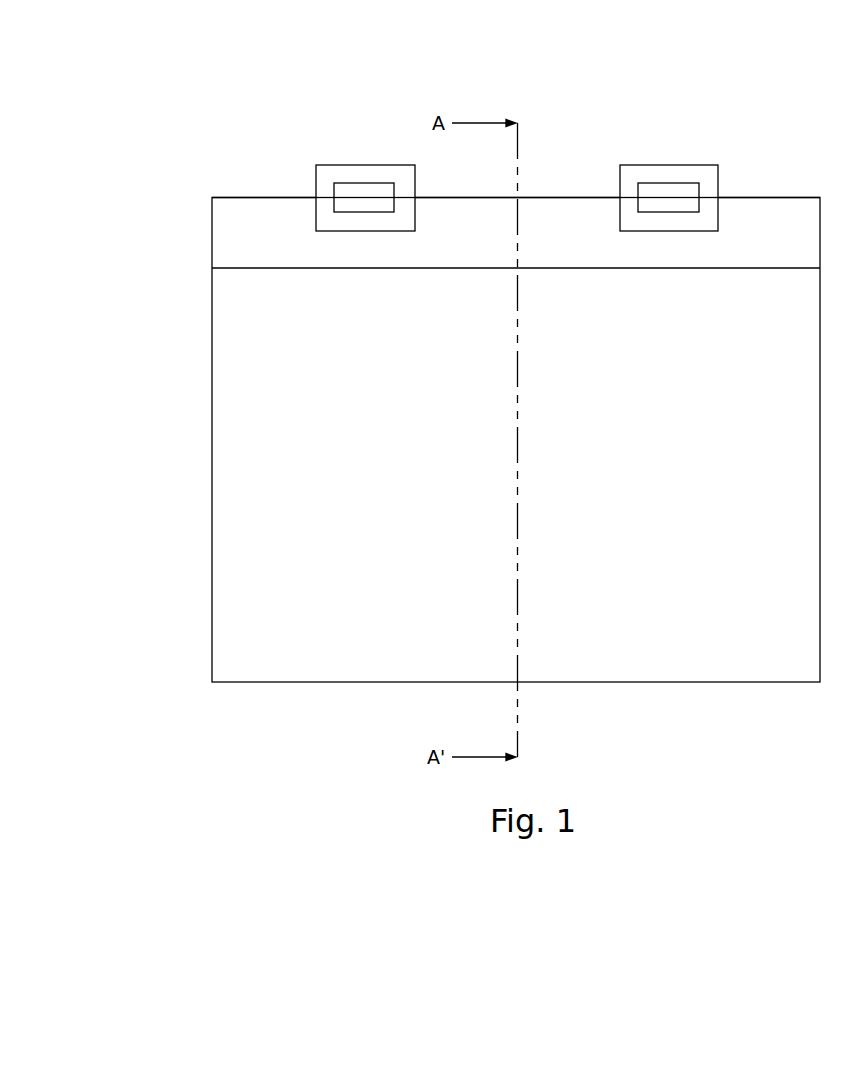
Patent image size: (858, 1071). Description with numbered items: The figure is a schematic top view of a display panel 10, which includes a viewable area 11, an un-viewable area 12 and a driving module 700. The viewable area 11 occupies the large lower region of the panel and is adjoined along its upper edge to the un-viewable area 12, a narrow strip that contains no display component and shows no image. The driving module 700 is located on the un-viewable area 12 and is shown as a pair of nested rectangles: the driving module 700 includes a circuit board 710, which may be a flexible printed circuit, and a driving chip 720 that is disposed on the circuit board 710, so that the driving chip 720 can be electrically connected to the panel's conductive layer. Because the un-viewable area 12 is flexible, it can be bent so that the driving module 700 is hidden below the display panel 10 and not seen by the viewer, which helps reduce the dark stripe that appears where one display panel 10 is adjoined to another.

The display panel 10 is at (127, 62).
The viewable area 11 is at (227, 452).
The un-viewable area 12 is at (227, 238).
The driving module 700 is at (398, 102).
The circuit board 710 is at (377, 175).
The driving chip 720 is at (347, 197).